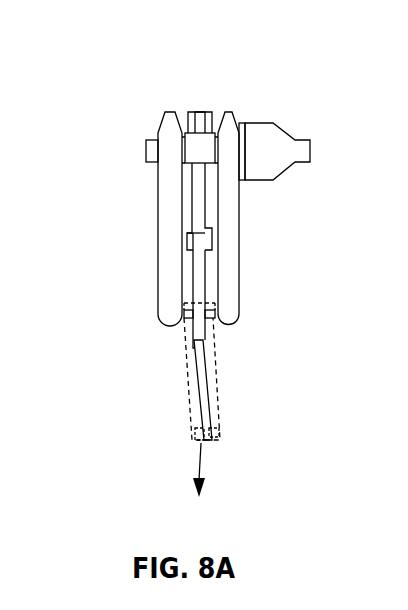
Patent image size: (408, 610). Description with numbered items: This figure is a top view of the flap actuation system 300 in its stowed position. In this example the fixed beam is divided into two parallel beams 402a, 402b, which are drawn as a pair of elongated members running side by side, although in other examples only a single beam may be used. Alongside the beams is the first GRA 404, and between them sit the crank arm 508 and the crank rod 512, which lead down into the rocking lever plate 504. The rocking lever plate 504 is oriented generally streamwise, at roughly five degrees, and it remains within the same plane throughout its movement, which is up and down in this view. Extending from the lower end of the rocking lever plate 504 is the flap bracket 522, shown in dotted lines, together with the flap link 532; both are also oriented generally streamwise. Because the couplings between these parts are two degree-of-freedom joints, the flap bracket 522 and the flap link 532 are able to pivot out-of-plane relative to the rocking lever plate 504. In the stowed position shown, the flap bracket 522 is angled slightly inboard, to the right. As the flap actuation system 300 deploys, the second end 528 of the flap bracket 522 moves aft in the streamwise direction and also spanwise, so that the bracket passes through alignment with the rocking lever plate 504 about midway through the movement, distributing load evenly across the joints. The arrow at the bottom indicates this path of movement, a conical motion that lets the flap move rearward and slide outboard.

The flap actuation system 300 is at (151, 84).
The parallel beam 402a is at (168, 180).
The parallel beam 402b is at (235, 243).
The first GRA 404 is at (272, 137).
The crank arm 508 is at (202, 117).
The crank rod 512 is at (198, 212).
The rocking lever plate 504 is at (197, 287).
The flap bracket 522 is at (188, 390).
The flap link 532 is at (200, 380).
The second end 528 is at (203, 443).